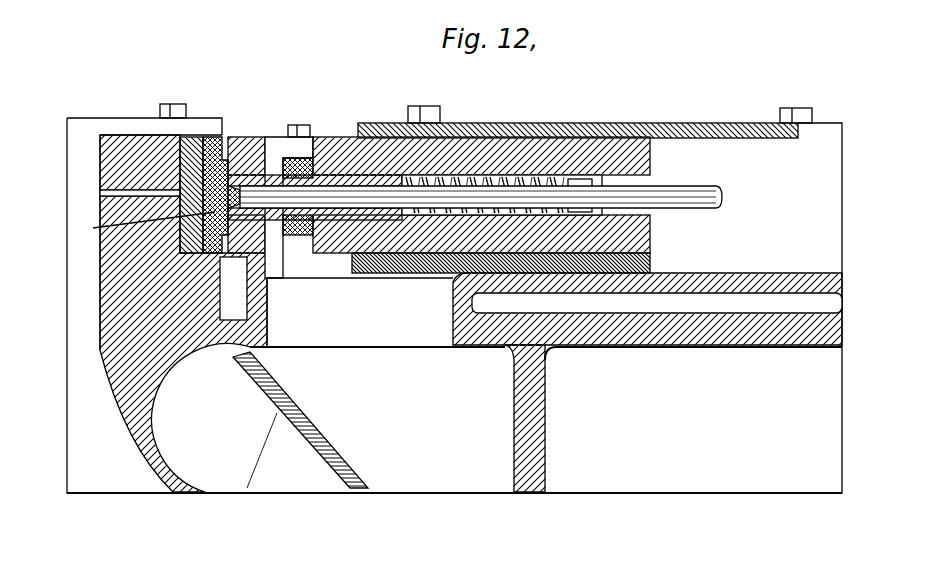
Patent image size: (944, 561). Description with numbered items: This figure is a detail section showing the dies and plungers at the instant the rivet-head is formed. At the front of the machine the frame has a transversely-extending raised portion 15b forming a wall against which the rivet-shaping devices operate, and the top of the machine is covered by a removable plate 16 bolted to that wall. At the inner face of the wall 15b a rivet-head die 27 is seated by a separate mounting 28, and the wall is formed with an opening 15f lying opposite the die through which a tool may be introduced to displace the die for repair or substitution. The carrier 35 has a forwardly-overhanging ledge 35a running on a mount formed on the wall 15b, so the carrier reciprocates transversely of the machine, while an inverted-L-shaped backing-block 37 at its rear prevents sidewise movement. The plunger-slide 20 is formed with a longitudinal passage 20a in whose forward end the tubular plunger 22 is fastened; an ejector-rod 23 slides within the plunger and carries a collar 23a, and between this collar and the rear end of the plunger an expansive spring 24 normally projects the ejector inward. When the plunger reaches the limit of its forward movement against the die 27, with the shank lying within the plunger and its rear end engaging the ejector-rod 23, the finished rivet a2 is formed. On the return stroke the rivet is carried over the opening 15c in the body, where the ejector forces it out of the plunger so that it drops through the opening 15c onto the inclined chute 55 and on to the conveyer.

The removable plate 16 is at (83, 126).
The transversely-extending raised portion 15b is at (135, 145).
The opening 15f is at (102, 195).
The rivet-head die 27 is at (142, 225).
The separate mounting 28 is at (190, 143).
The forwardly-overhanging ledge 35a is at (223, 140).
The carrier 35 is at (256, 142).
The backing-block 37 is at (277, 146).
The plunger-slide 20 is at (558, 157).
The plunger 22 is at (274, 218).
The expansive spring 24 is at (455, 178).
The longitudinal passage 20a is at (504, 178).
The ejector-rod 23 is at (684, 193).
The collar 23a is at (578, 188).
The finished rivet a2 is at (246, 254).
The opening 15c is at (360, 312).
The inclined chute 55 is at (308, 421).